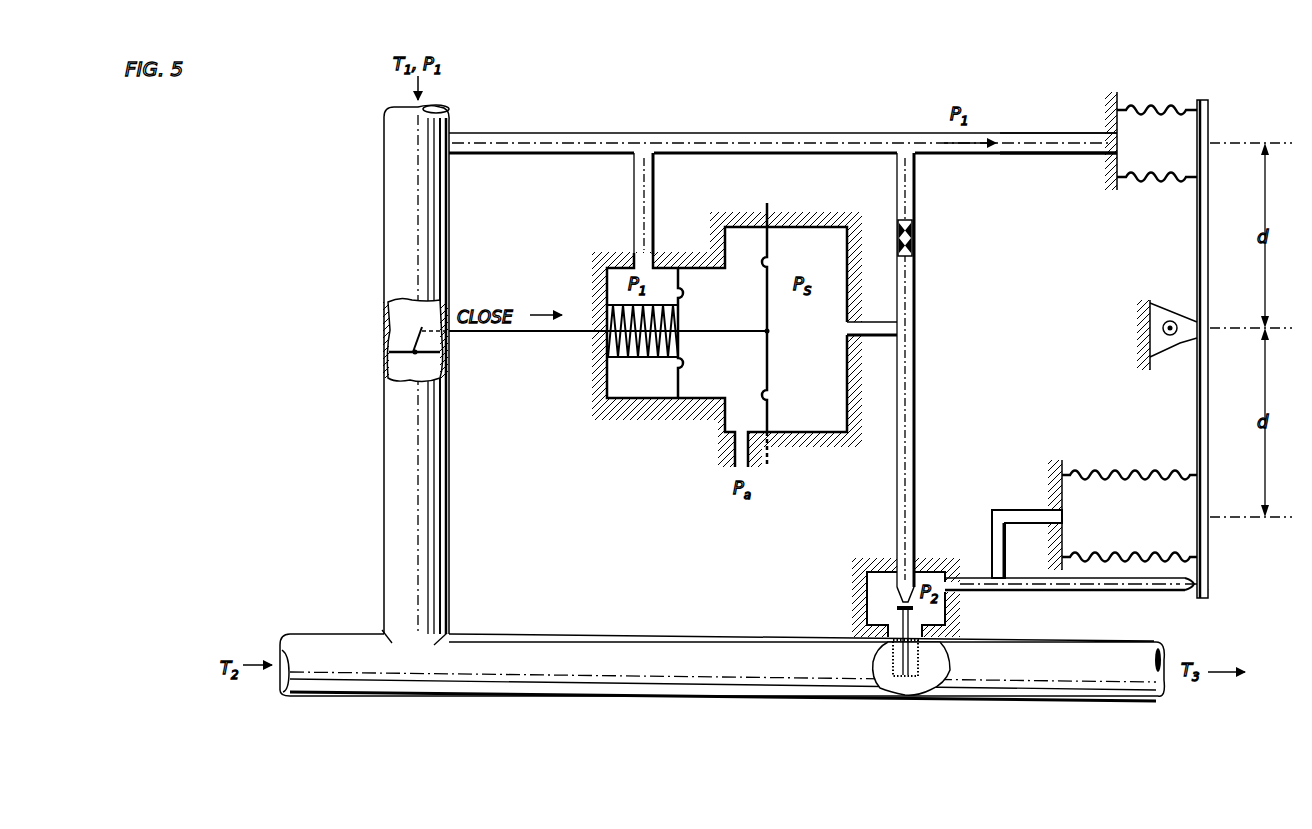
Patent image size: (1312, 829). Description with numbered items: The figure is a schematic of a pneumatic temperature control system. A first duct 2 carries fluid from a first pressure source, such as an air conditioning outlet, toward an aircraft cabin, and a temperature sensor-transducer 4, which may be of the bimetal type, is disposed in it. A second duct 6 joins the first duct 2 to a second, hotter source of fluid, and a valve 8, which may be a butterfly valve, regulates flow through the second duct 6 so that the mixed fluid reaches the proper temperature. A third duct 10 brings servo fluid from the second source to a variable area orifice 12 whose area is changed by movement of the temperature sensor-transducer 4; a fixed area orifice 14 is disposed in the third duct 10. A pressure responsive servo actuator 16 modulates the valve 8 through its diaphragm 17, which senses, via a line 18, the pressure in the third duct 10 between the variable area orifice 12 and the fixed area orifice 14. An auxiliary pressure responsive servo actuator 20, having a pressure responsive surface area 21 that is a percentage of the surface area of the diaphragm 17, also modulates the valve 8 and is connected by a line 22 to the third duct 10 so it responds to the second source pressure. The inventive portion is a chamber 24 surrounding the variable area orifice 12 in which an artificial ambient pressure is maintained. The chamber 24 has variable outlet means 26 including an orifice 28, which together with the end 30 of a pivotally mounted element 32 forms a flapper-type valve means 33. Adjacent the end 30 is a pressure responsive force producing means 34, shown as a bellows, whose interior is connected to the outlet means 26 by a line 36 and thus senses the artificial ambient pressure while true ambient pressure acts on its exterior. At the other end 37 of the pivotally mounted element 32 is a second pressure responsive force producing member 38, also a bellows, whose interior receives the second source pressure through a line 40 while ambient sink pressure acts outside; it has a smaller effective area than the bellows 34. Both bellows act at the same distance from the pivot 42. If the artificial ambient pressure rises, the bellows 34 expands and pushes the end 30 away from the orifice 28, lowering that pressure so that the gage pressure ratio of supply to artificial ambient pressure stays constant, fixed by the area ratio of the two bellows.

The first duct 2 is at (611, 634).
The temperature sensor-transducer 4 is at (893, 660).
The second duct 6 is at (393, 204).
The valve 8 is at (383, 331).
The third duct 10 is at (553, 133).
The variable area orifice 12 is at (895, 600).
The fixed area orifice 14 is at (914, 230).
The pressure responsive servo actuator 16 is at (808, 430).
The diaphragm 17 is at (765, 353).
The line 18 is at (886, 320).
The auxiliary pressure responsive servo actuator 20 is at (640, 400).
The pressure responsive surface area 21 is at (680, 285).
The line 22 is at (634, 178).
The chamber 24 is at (860, 572).
The variable outlet means 26 is at (985, 590).
The orifice 28 is at (1195, 583).
The end 30 is at (1190, 596).
The pivotally mounted element 32 is at (1196, 243).
The valve means 33 is at (1209, 592).
The pressure responsive force producing means 34 is at (1144, 475).
The line 36 is at (1021, 512).
The other end 37 is at (1210, 120).
The second pressure responsive force producing member 38 is at (1168, 108).
The line 40 is at (1058, 134).
The pivot 42 is at (1170, 320).